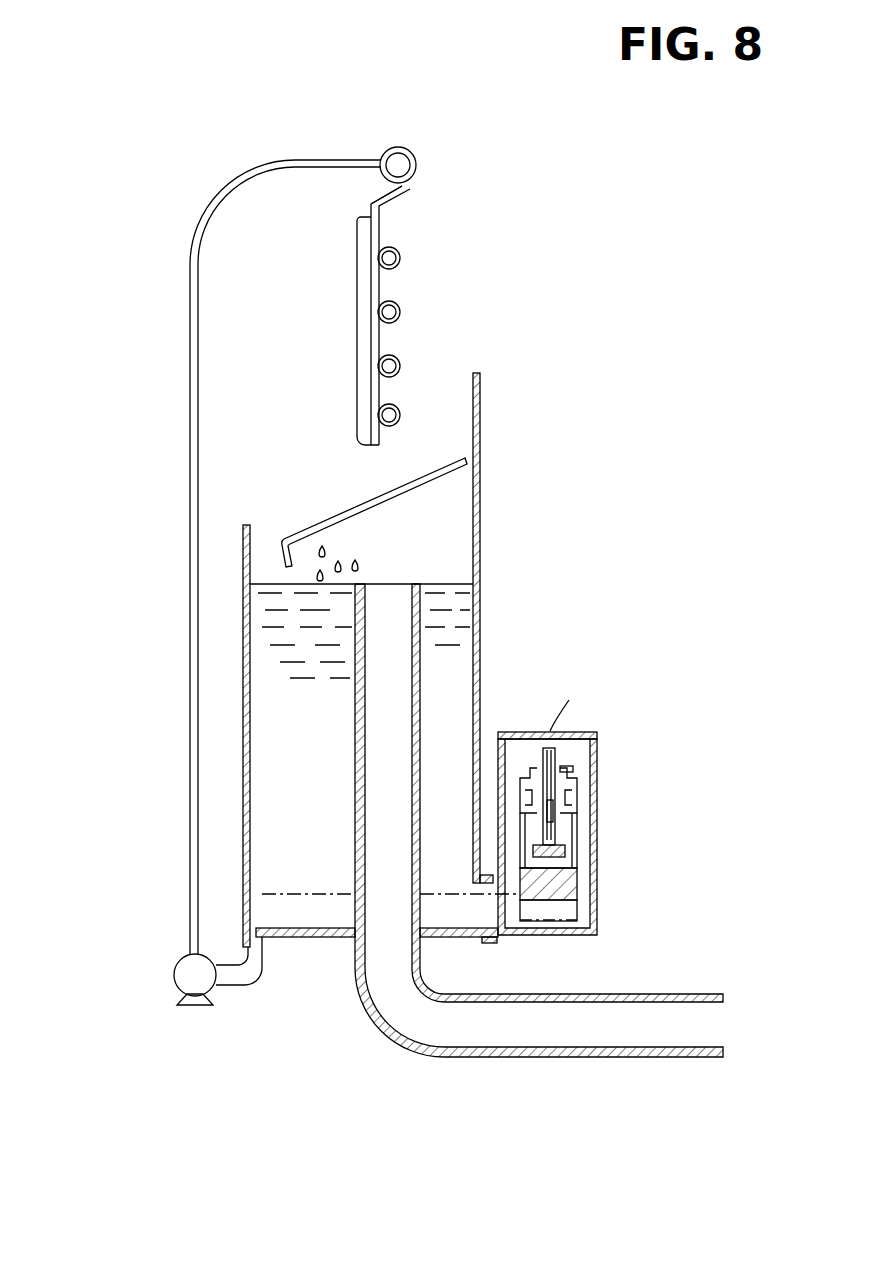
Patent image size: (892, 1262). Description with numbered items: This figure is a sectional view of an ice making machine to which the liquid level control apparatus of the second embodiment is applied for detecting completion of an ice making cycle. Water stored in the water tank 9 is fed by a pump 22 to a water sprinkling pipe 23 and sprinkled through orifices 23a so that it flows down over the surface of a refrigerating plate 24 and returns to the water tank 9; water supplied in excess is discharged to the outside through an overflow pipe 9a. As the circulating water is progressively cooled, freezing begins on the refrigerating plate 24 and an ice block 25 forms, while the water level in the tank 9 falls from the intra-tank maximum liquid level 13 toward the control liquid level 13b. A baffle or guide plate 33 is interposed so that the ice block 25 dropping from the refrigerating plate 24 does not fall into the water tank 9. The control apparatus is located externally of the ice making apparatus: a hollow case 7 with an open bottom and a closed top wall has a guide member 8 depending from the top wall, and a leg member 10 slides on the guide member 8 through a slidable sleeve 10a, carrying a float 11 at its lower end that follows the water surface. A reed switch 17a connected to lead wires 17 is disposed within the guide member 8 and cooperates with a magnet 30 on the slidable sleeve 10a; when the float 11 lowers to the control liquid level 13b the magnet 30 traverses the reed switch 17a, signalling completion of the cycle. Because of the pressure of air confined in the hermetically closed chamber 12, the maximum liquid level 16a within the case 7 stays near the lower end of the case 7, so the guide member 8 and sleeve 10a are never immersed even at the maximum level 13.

The hollow case 7 is at (577, 815).
The guide member 8 is at (578, 733).
The water tank 9 is at (243, 650).
The overflow pipe 9a is at (452, 1060).
The leg member 10 is at (555, 826).
The slidable sleeve 10a is at (567, 770).
The float 11 is at (577, 908).
The hermetically closed chamber 12 is at (573, 752).
The intra-tank maximum liquid level 13 is at (440, 583).
The control liquid level 13b is at (262, 895).
The maximum liquid level within the case 16a is at (577, 872).
The lead wires 17 is at (544, 731).
The reed switch 17a is at (565, 850).
The pump 22 is at (174, 977).
The water sprinkling pipe 23 is at (417, 160).
The orifices 23a is at (378, 183).
The refrigerating plate 24 is at (381, 207).
The ice block 25 is at (357, 278).
The magnet 30 is at (525, 783).
The baffle or guide plate 33 is at (330, 515).